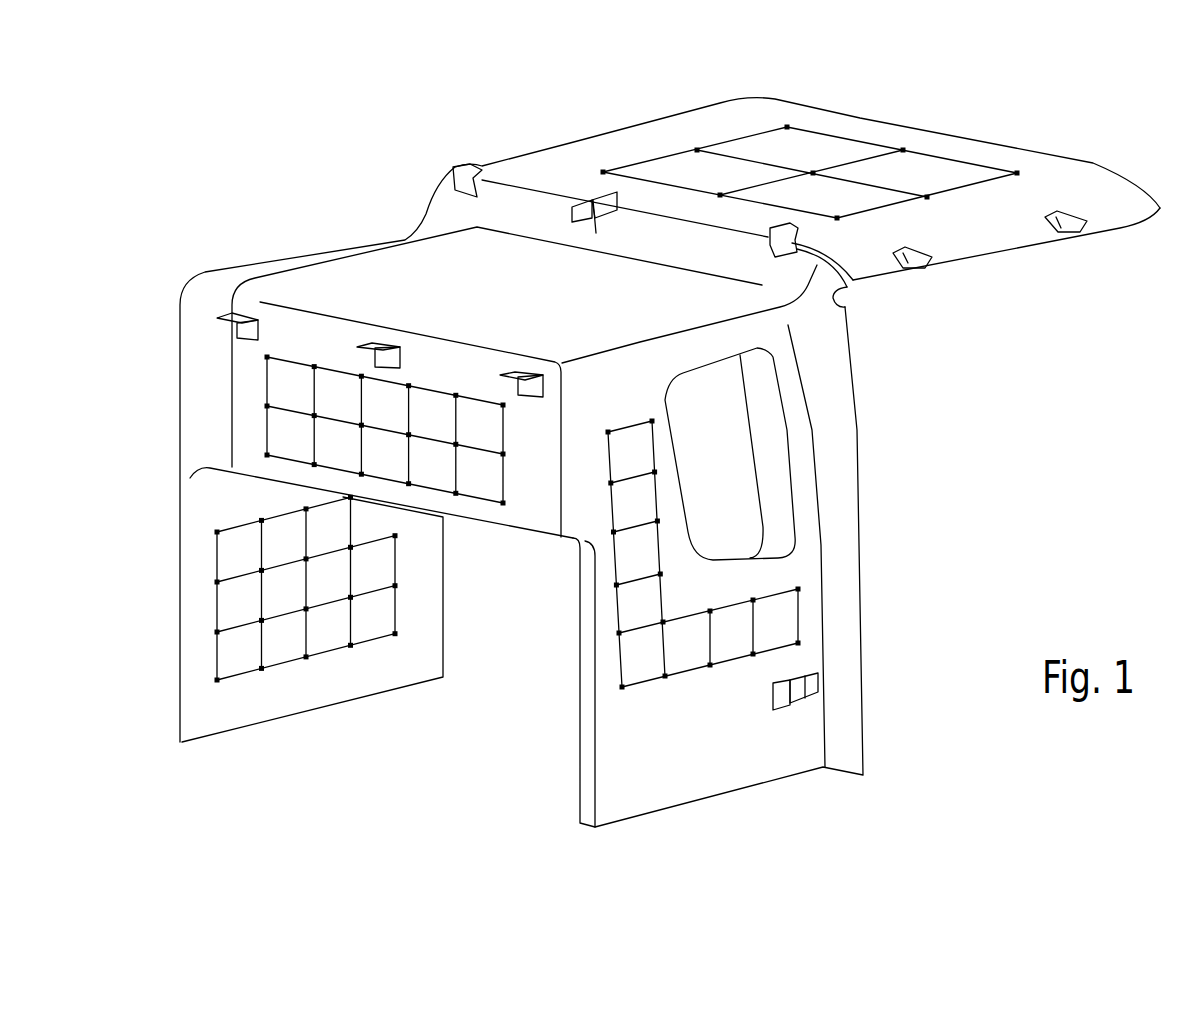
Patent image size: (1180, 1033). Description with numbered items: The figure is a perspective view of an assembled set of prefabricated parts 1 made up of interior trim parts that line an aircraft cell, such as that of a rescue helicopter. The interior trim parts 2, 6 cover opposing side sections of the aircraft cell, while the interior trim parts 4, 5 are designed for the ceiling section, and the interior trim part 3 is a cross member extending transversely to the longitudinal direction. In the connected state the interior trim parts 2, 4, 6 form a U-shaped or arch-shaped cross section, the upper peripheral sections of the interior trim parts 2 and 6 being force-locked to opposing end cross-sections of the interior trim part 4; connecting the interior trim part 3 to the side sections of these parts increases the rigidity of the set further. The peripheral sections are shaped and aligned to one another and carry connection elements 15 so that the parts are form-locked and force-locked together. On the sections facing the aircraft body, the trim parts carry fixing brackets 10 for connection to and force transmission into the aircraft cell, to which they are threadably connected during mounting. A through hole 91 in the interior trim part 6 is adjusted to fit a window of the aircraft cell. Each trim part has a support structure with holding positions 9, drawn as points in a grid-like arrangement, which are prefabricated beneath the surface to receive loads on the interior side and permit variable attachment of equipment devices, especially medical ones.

The set of prefabricated parts 1 is at (962, 383).
The interior trim part 2 is at (330, 667).
The interior trim part 3 is at (538, 480).
The interior trim part 4 is at (462, 277).
The interior trim part 5 is at (970, 215).
The interior trim part 6 is at (650, 731).
The holding positions 9 is at (622, 585).
The fixing brackets 10 is at (513, 377).
The connection elements 15 is at (707, 330).
The through holes 91 is at (720, 460).